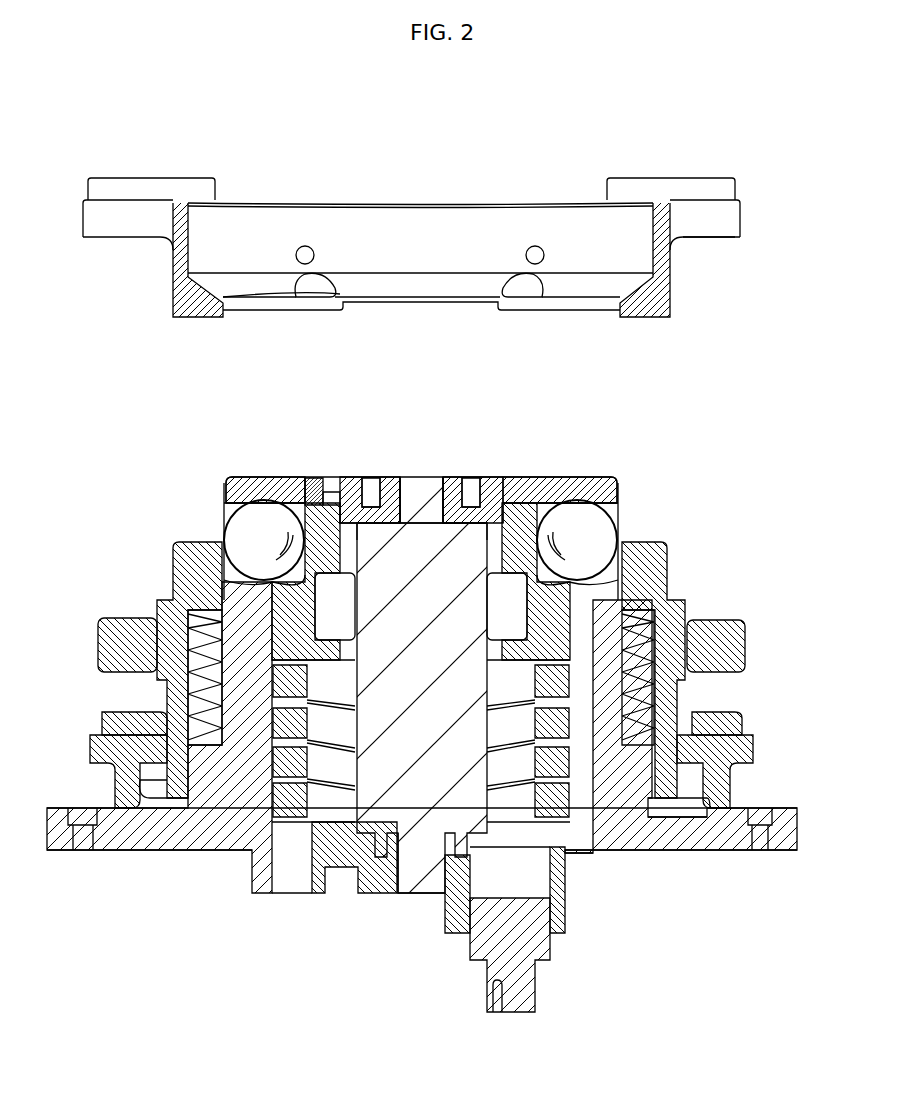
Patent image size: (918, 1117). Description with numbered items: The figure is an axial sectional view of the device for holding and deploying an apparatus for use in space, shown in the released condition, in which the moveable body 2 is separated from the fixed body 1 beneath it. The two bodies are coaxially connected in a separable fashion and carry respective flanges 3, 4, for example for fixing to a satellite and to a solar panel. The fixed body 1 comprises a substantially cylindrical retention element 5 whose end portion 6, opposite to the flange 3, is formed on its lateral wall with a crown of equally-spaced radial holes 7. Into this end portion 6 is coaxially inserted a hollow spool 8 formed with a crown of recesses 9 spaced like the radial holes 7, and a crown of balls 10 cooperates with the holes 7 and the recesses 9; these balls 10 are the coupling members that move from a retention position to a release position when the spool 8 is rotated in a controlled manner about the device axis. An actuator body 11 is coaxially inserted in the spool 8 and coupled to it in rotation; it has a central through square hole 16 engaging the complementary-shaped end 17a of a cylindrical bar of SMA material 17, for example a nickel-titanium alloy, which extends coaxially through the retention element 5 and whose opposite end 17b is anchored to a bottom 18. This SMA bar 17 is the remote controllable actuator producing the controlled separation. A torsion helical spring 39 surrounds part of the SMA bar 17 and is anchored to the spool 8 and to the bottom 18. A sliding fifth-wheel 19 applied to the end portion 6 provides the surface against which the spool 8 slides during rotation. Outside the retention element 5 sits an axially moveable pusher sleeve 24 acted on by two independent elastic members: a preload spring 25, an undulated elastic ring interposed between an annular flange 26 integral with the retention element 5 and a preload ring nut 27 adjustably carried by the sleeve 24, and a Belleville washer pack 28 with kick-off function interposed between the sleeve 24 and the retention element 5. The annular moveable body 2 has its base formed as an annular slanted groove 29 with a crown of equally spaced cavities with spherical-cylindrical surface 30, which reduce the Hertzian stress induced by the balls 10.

The fixed body 1 is at (190, 960).
The moveable body 2 is at (327, 152).
The flange 3 is at (790, 850).
The flange 4 is at (705, 232).
The retention element 5 is at (218, 835).
The end portion 6 is at (245, 477).
The radial holes 7 is at (228, 500).
The hollow spool 8 is at (357, 658).
The recesses 9 is at (318, 580).
The balls 10 is at (232, 535).
The actuator body 11 is at (352, 477).
The through square hole 16 is at (440, 488).
The SMA bar 17 is at (455, 800).
The end of SMA bar 17a is at (412, 500).
The opposite end of SMA bar 17b is at (423, 882).
The bottom 18 is at (378, 895).
The sliding fifth-wheel 19 is at (318, 493).
The pusher sleeve 24 is at (182, 560).
The preload spring 25 is at (100, 722).
The annular flange 26 is at (90, 748).
The preload ring nut 27 is at (110, 640).
The Belleville washer pack 28 is at (660, 650).
The annular slanted groove 29 is at (255, 283).
The cavities with spherical-cylindrical surface 30 is at (313, 293).
The torsion helical spring 39 is at (285, 830).